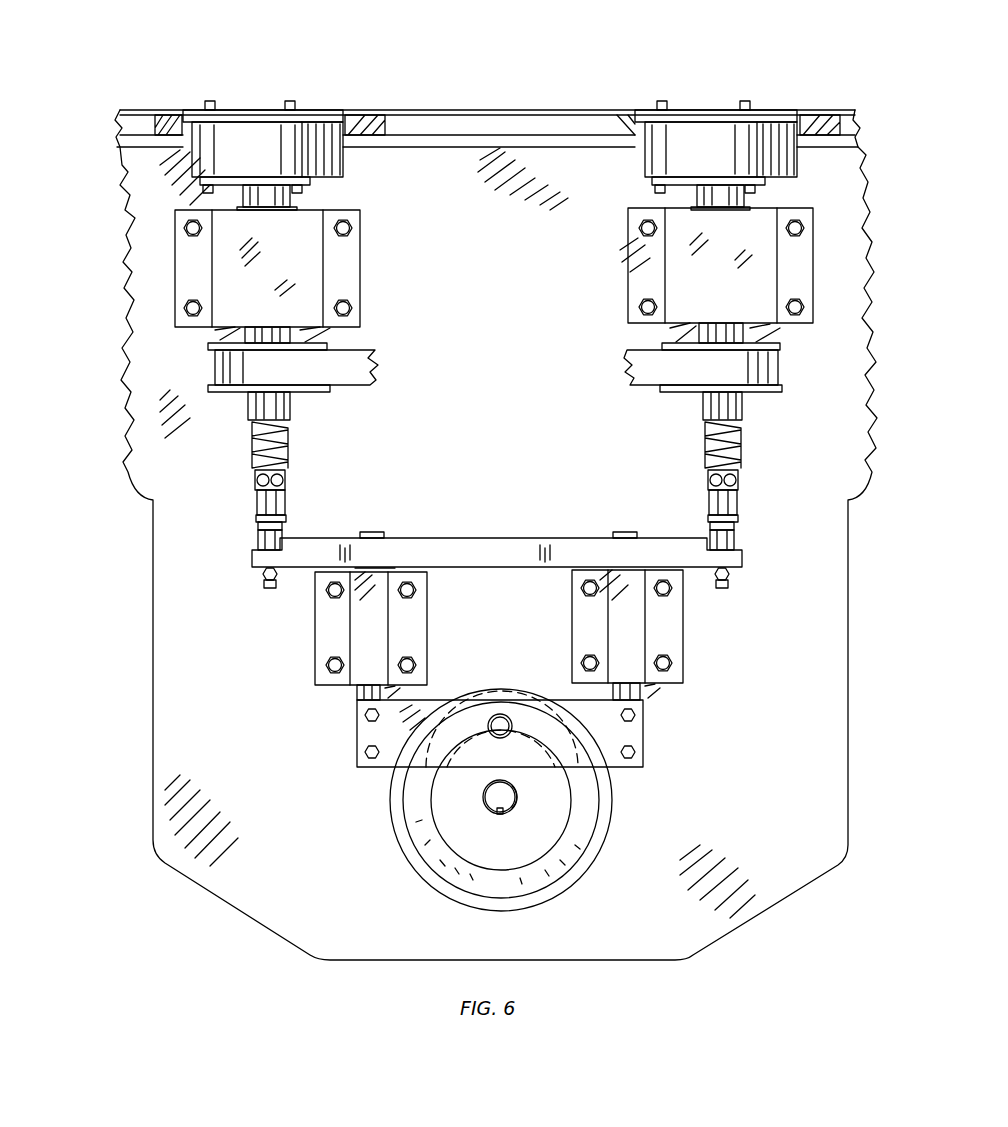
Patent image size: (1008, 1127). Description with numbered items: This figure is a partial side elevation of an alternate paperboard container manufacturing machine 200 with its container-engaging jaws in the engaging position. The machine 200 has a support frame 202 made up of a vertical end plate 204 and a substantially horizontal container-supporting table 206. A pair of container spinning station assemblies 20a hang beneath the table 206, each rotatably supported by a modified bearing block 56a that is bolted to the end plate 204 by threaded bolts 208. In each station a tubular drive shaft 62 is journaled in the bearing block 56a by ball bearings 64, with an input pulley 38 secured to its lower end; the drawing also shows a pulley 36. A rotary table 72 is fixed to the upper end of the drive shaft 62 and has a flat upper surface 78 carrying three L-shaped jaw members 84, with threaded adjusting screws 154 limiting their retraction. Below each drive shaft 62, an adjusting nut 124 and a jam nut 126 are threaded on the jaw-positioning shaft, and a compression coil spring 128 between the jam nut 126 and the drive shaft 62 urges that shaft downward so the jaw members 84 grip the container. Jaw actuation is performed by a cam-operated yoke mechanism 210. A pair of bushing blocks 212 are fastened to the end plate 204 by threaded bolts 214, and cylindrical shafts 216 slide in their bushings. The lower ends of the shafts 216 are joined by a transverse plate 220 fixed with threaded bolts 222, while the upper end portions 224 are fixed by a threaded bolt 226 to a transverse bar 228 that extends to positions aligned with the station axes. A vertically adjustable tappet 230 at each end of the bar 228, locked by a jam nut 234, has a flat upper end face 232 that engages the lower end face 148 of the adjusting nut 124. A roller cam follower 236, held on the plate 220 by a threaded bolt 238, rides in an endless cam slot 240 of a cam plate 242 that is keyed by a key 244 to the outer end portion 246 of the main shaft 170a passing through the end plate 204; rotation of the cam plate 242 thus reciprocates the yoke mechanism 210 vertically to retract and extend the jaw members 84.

The paperboard container manufacturing machine 200 is at (452, 64).
The support frame 202 is at (215, 872).
The vertical end plate 204 is at (246, 863).
The container-supporting table 206 is at (537, 110).
The threaded bolts 208 is at (188, 210).
The cam-operated yoke mechanism 210 is at (295, 664).
The bushing blocks 212 is at (428, 578).
The threaded bolts 214 is at (326, 664).
The cylindrical shafts 216 is at (357, 690).
The transverse plate 220 is at (520, 700).
The threaded bolts 222 is at (365, 752).
The upper end portions 224 is at (375, 568).
The threaded bolt 226 is at (372, 532).
The transverse bar 228 is at (490, 538).
The vertically adjustable tappet 230 is at (258, 540).
The upper end face 232 is at (256, 518).
The jam nut 234 is at (262, 577).
The roller cam follower 236 is at (478, 705).
The threaded bolt 238 is at (513, 724).
The endless cam slot 240 is at (612, 790).
The cam plate 242 is at (612, 833).
The key 244 is at (503, 814).
The outer end portion 246 is at (483, 797).
The main shaft 170a is at (515, 783).
The container spinning station assemblies 20a is at (345, 190).
The pulley 36 is at (372, 352).
The input pulley 38 is at (222, 395).
The bearing block 56a is at (320, 268).
The tubular drive shaft 62 is at (300, 332).
The ball bearings 64 is at (243, 197).
The rotary table 72 is at (256, 130).
The upper surface 78 is at (230, 110).
The jaw members 84 is at (210, 100).
The adjusting nut 124 is at (285, 500).
The jam nut 126 is at (255, 480).
The compression coil spring 128 is at (290, 455).
The lower end face 148 is at (282, 526).
The threaded adjusting screws 154 is at (203, 189).